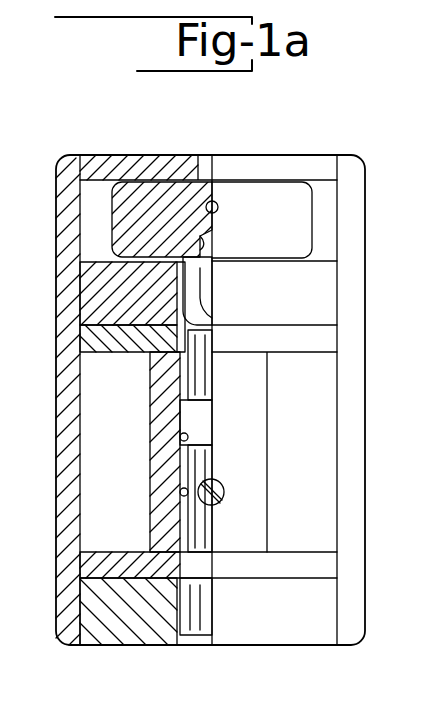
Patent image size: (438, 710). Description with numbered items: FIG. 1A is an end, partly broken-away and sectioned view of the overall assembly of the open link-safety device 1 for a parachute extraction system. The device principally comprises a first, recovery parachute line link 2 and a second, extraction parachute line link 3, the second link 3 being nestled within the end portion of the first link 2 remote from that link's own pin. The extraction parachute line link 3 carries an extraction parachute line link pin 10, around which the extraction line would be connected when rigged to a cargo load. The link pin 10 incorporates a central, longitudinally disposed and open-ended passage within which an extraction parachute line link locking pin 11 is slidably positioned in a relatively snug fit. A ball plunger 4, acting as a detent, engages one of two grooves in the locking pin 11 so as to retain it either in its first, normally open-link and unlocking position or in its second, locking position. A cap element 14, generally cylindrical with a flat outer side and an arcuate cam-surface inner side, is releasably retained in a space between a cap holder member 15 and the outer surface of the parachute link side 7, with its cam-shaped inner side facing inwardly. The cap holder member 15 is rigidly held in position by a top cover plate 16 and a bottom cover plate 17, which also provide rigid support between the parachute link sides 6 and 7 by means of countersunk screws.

The open link-safety device 1 is at (364, 397).
The recovery parachute line link 2 is at (93, 288).
The extraction parachute line link 3 is at (100, 553).
The ball plunger 4 is at (225, 491).
The parachute link side 6 is at (255, 628).
The parachute link side 7 is at (322, 293).
The extraction parachute line link pin 10 is at (160, 387).
The extraction parachute line link locking pin 11 is at (198, 463).
The cap element 14 is at (142, 185).
The cap holder member 15 is at (240, 156).
The top cover plate 16 is at (60, 186).
The bottom cover plate 17 is at (366, 500).